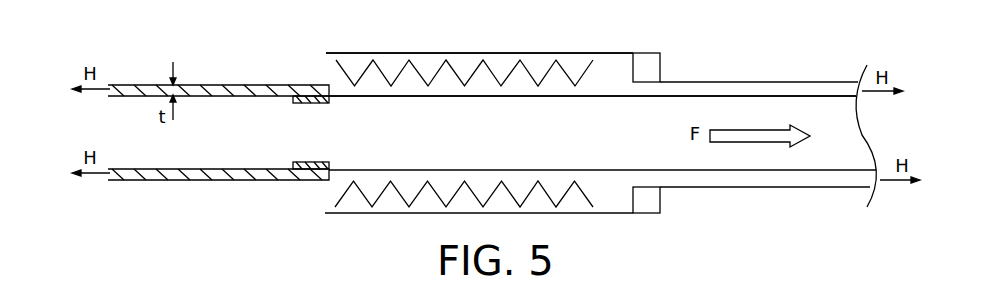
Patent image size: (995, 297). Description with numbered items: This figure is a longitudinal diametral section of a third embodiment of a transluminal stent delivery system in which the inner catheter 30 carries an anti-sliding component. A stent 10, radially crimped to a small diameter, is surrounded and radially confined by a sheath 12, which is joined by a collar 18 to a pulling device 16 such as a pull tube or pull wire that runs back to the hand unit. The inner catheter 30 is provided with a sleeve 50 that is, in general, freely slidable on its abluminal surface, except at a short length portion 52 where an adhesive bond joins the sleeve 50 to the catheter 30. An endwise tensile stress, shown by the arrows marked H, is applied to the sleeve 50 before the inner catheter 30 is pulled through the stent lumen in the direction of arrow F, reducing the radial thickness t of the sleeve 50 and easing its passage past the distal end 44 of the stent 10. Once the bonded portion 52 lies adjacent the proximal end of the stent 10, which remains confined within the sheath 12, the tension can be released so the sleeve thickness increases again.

The stent 10 is at (548, 70).
The sheath 12 is at (610, 53).
The pulling device 16 is at (790, 82).
The collar 18 is at (645, 54).
The inner catheter 30 is at (605, 98).
The distal end of the stent 44 is at (342, 72).
The sleeve 50 is at (217, 83).
The short length portion 52 is at (310, 104).